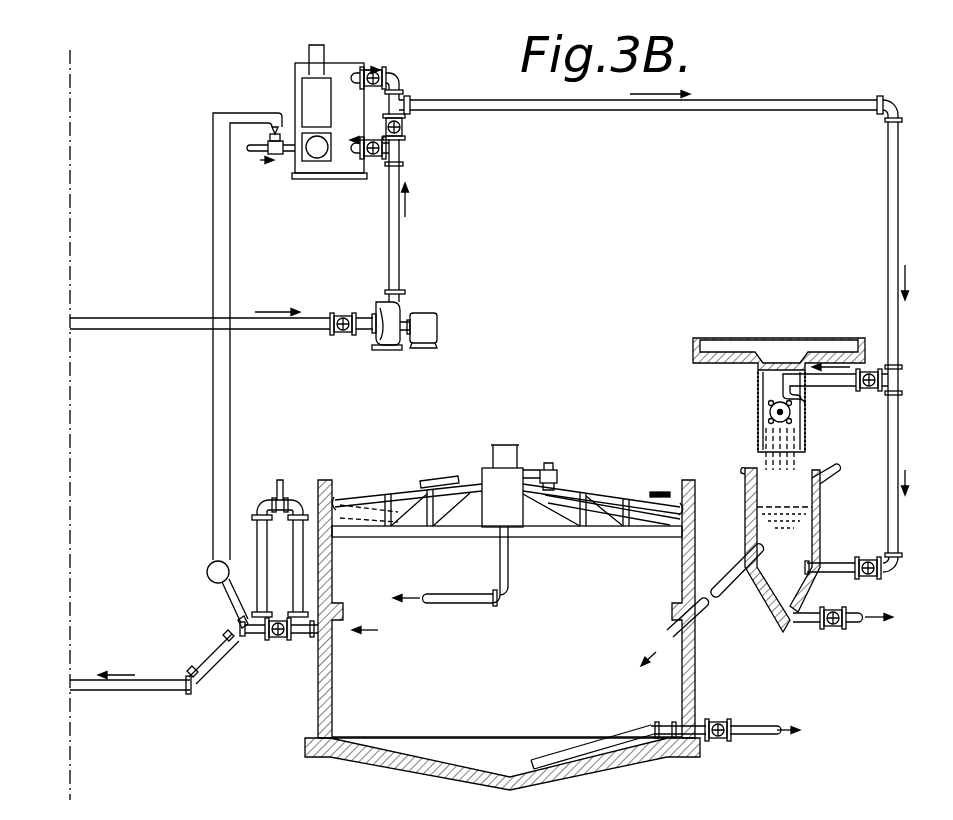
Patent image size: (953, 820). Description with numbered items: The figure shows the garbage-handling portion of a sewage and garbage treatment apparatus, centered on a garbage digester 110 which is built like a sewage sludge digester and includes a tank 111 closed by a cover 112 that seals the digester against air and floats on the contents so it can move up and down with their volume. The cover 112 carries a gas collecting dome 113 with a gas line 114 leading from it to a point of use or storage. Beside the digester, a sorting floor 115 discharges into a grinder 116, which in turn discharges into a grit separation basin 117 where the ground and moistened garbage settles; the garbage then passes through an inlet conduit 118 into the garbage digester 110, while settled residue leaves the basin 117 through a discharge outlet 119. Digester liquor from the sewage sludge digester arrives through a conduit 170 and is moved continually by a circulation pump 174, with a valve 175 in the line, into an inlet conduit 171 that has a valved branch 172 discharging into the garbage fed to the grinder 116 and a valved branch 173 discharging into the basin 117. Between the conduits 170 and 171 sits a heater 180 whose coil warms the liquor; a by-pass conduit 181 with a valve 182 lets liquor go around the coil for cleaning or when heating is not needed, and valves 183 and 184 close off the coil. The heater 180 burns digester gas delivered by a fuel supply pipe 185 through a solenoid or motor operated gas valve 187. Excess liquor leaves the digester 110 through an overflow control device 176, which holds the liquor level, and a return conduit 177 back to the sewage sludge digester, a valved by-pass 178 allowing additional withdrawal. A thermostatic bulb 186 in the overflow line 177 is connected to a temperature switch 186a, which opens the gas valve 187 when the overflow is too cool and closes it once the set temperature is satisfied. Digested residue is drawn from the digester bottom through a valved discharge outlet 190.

The garbage digester 110 is at (702, 680).
The tank 111 is at (692, 643).
The cover 112 is at (577, 497).
The gas collecting dome 113 is at (520, 470).
The gas line 114 is at (509, 578).
The sorting floor 115 is at (693, 345).
The grinder 116 is at (806, 432).
The grit separation basin 117 is at (821, 520).
The inlet conduit 118 is at (732, 578).
The discharge outlet 119 is at (826, 624).
The conduit 170 is at (155, 331).
The inlet conduit 171 is at (750, 112).
The valved branch 172 is at (843, 386).
The valved branch 173 is at (846, 572).
The circulation pump 174 is at (386, 346).
The valve 175 is at (343, 336).
The overflow control device 176 is at (288, 497).
The return conduit 177 is at (152, 690).
The valved by-pass 178 is at (297, 636).
The heater 180 is at (290, 82).
The by-pass conduit 181 is at (400, 152).
The valve 182 is at (405, 128).
The valve 183 is at (373, 160).
The valve 184 is at (383, 76).
The fuel supply pipe 185 is at (250, 148).
The thermostatic bulb 186 is at (237, 628).
The temperature switch 186a is at (207, 572).
The gas valve 187 is at (276, 155).
The valved discharge outlet 190 is at (630, 745).